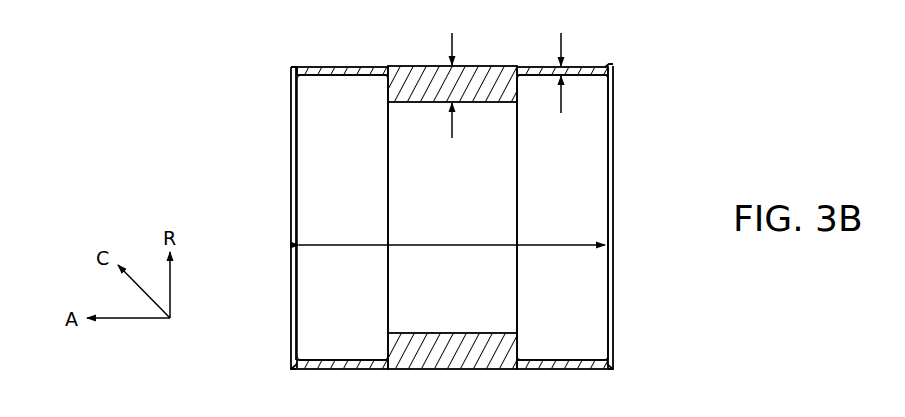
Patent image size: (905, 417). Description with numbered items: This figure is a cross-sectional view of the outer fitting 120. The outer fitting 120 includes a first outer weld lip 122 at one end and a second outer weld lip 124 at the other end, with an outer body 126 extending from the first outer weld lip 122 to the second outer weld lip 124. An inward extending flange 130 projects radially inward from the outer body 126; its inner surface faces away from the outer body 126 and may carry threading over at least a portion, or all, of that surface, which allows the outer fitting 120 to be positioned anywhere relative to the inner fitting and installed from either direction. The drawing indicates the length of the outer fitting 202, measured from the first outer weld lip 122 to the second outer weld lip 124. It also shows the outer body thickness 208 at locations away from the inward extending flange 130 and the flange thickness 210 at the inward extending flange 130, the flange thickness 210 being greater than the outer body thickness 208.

The outer fitting 120 is at (226, 203).
The first outer weld lip 122 is at (291, 126).
The second outer weld lip 124 is at (613, 95).
The outer body 126 is at (323, 72).
The inward extending flange 130 is at (401, 103).
The length of the outer fitting 202 is at (545, 244).
The outer body thickness 208 is at (563, 50).
The flange thickness 210 is at (453, 122).